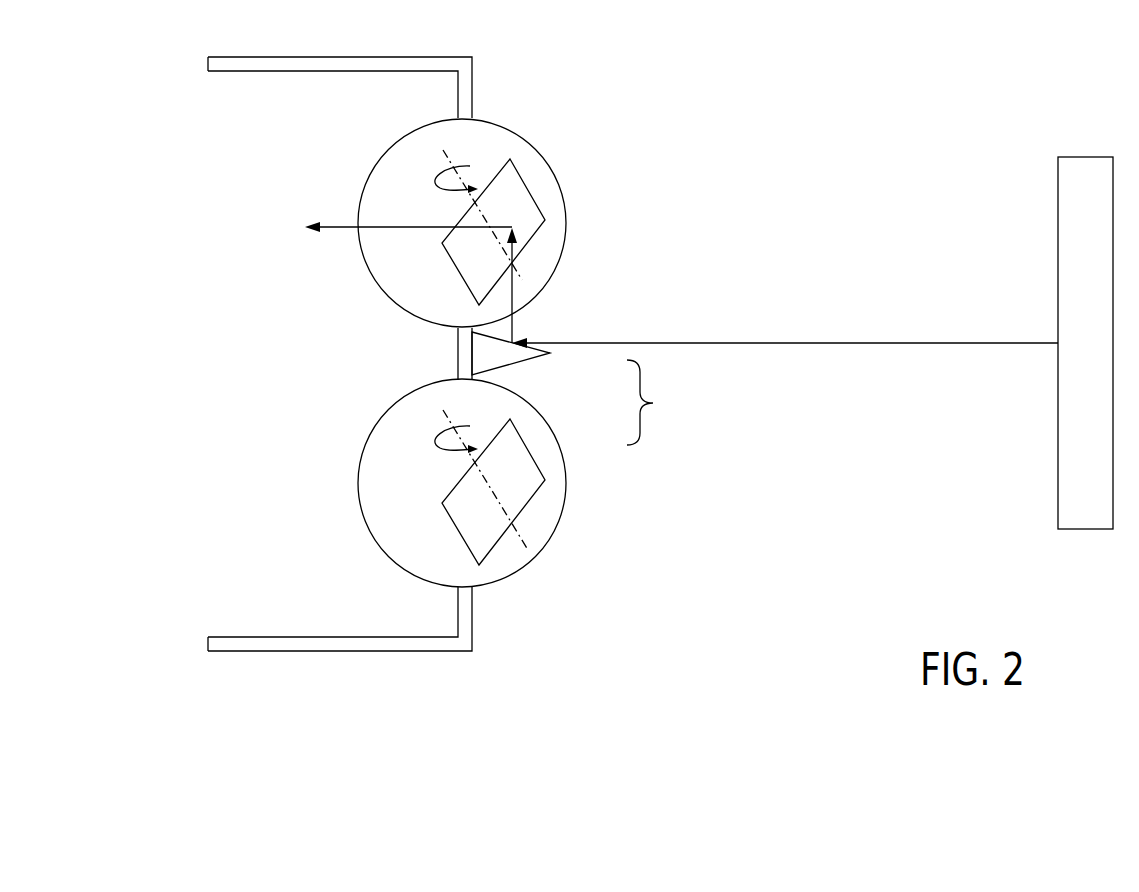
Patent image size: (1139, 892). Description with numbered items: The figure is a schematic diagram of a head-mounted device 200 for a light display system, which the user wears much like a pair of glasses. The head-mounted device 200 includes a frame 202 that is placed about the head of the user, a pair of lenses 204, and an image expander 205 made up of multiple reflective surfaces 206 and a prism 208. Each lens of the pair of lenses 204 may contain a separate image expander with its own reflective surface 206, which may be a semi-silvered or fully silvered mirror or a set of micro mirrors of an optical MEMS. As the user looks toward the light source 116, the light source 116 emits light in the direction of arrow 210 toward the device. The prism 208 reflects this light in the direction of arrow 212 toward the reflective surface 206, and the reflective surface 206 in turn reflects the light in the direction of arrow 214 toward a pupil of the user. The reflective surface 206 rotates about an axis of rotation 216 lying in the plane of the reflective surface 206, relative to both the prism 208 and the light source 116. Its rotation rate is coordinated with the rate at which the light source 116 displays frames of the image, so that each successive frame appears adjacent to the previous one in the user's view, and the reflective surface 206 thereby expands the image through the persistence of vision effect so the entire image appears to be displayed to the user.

The head-mounted device 200 is at (280, 140).
The frame 202 is at (333, 637).
The pair of lenses 204 is at (525, 567).
The image expander 205 is at (664, 402).
The reflective surface 206 is at (527, 185).
The prism 208 is at (510, 367).
The arrow 210 is at (792, 343).
The arrow 212 is at (520, 290).
The arrow 214 is at (345, 232).
The axis of rotation 216 is at (522, 537).
The light source 116 is at (1085, 530).